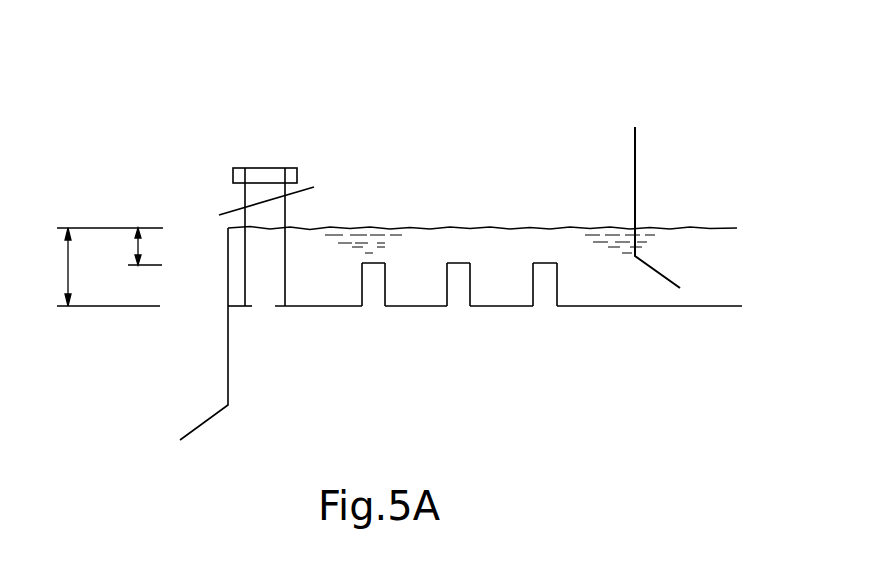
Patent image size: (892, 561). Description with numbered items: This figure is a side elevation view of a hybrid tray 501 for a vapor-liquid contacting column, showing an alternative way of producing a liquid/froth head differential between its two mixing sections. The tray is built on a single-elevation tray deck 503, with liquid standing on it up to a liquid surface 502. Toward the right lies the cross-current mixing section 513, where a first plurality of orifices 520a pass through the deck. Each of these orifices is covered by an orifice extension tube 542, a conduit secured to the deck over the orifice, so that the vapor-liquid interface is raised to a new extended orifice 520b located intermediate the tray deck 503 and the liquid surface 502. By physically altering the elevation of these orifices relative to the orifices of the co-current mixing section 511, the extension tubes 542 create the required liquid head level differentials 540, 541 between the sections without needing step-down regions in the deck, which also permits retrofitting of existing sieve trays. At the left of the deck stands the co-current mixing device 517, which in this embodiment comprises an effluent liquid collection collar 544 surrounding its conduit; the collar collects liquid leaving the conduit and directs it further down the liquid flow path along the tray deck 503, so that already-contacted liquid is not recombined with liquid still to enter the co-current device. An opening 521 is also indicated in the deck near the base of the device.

The hybrid tray 501 is at (612, 102).
The liquid surface 502 is at (690, 225).
The tray deck 503 is at (730, 303).
The co-current mixing section 511 is at (612, 307).
The cross-current mixing section 513 is at (302, 308).
The co-current mixing device 517 is at (245, 196).
The first plurality of orifices 520a is at (543, 353).
The extended orifice 520b is at (542, 262).
The opening 521 is at (263, 308).
The liquid head level differential 540 is at (137, 248).
The liquid head level differential 541 is at (72, 268).
The orifice extension tubes 542 is at (430, 333).
The effluent liquid collection collar 544 is at (225, 215).